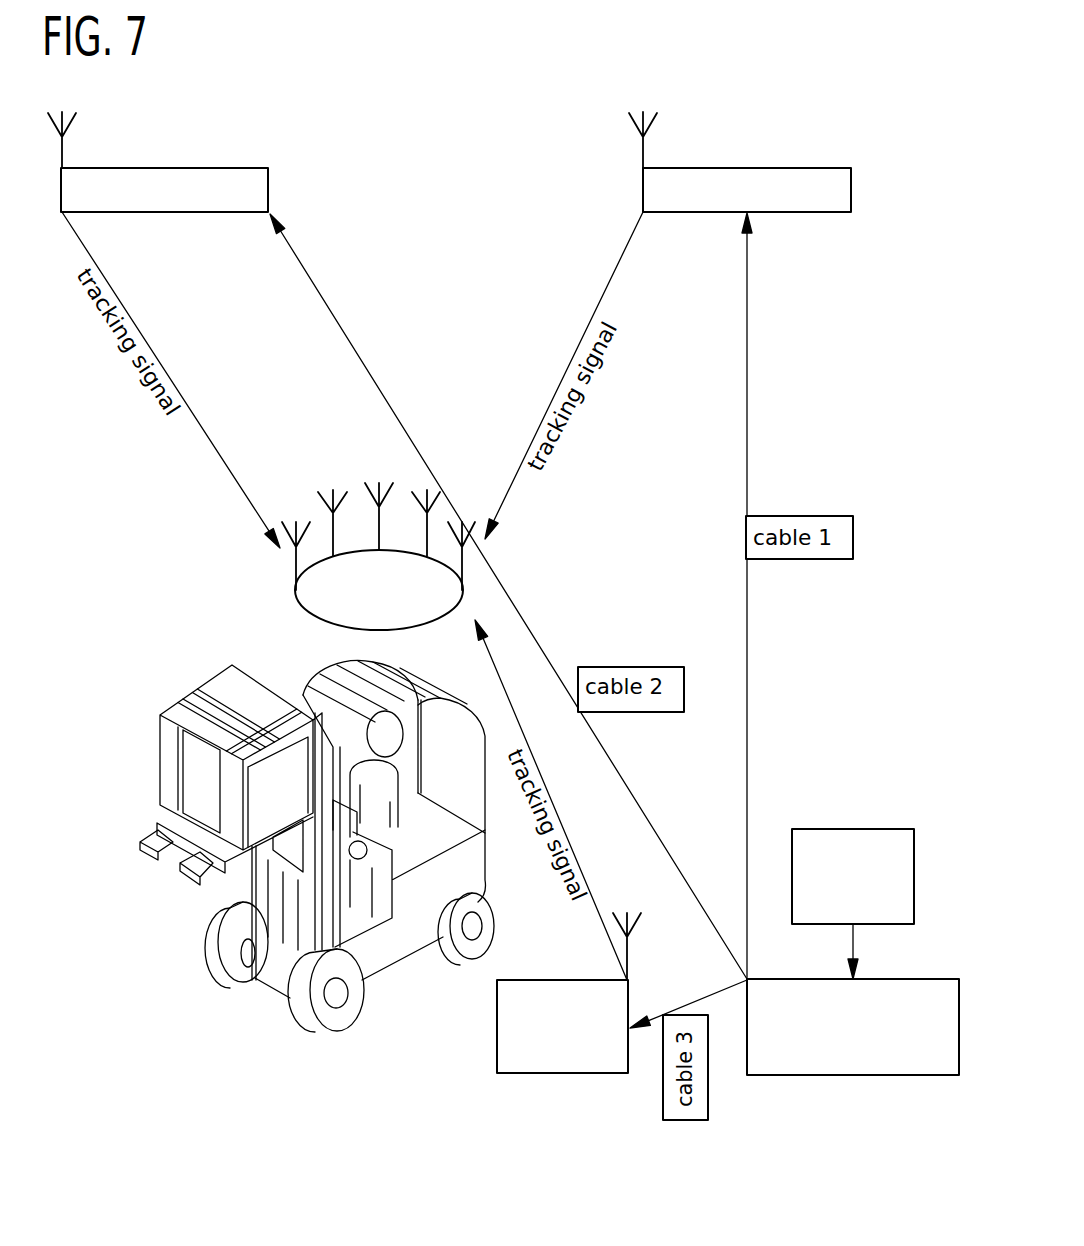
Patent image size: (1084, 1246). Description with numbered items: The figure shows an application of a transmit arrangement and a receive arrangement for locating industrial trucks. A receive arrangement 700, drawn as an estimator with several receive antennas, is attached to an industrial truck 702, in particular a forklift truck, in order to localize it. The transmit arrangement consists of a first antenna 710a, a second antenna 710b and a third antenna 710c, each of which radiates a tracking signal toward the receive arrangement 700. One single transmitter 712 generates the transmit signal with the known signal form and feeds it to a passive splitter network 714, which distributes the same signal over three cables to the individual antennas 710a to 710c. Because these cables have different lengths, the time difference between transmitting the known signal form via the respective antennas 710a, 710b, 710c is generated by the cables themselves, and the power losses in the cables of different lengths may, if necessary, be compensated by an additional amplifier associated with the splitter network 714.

The receive arrangement 700 is at (326, 622).
The industrial truck 702 is at (400, 947).
The first antenna 710a is at (62, 148).
The second antenna 710b is at (643, 148).
The third antenna 710c is at (628, 957).
The transmitter 712 is at (853, 829).
The passive splitter network 714 is at (853, 1075).